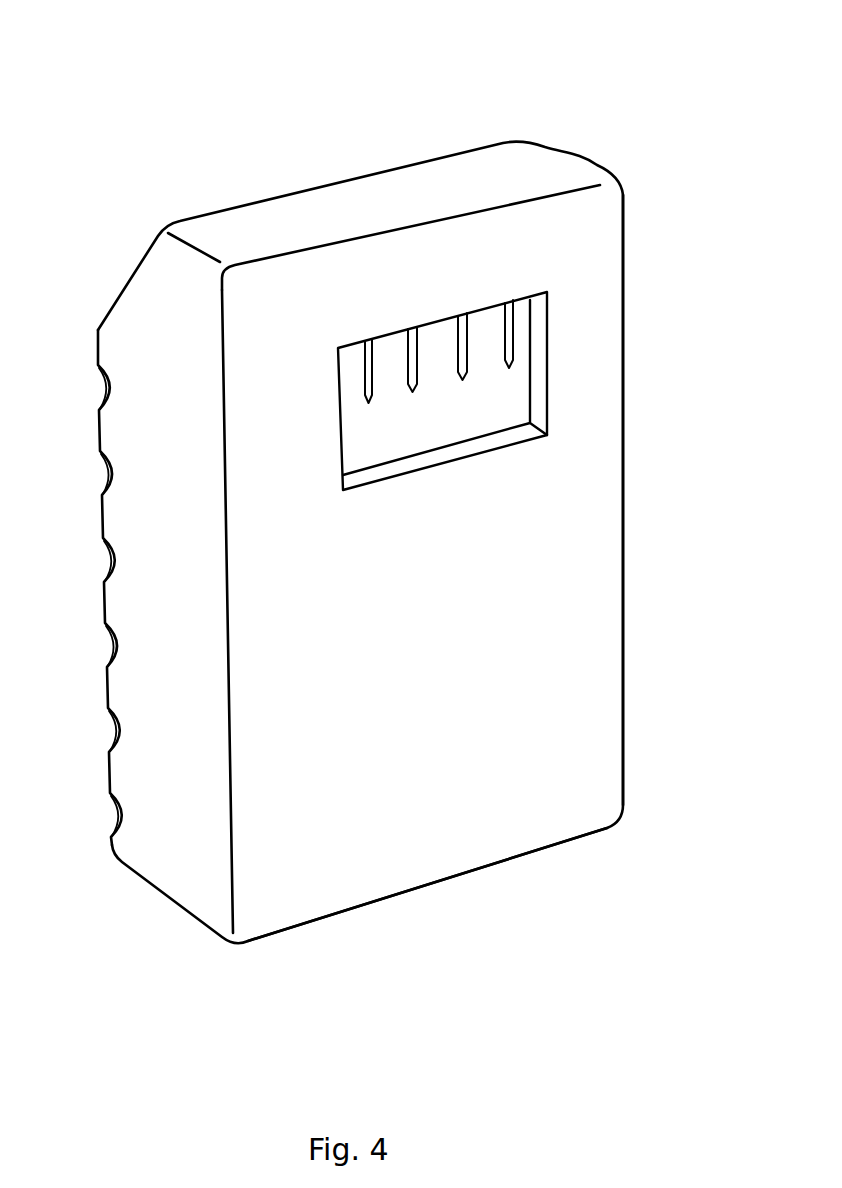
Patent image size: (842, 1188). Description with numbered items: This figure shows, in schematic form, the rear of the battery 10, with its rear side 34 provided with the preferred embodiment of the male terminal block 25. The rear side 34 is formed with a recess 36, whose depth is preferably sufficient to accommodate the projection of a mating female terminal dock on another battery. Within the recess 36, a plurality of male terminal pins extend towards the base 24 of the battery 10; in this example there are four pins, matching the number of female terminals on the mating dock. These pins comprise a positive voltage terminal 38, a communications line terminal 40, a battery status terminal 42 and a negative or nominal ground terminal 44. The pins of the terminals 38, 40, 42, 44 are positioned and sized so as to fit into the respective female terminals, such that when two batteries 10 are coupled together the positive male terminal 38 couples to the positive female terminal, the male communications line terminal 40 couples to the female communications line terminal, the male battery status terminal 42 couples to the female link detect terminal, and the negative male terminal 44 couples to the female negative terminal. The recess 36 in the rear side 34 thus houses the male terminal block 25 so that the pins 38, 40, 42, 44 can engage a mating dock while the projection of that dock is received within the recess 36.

The battery 10 is at (652, 120).
The base 24 is at (355, 908).
The male terminal block 25 is at (562, 375).
The rear side 34 is at (563, 660).
The recess 36 is at (353, 435).
The positive voltage terminal 38 is at (508, 326).
The communications line terminal 40 is at (456, 322).
The battery status terminal 42 is at (413, 349).
The negative or nominal ground terminal 44 is at (368, 370).